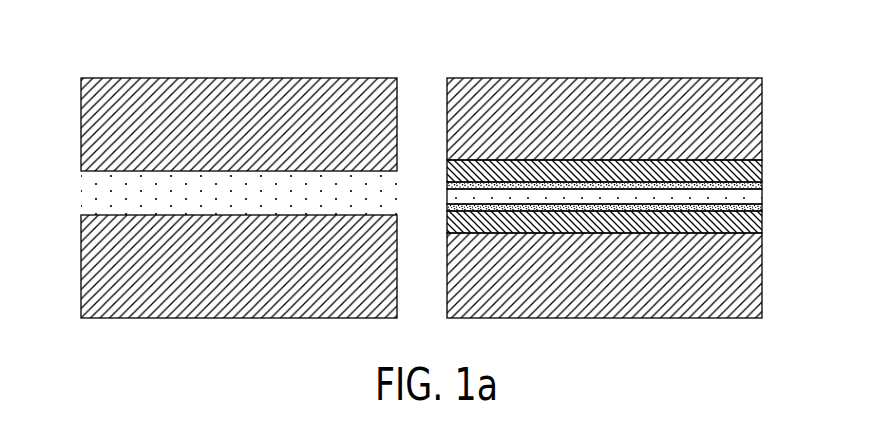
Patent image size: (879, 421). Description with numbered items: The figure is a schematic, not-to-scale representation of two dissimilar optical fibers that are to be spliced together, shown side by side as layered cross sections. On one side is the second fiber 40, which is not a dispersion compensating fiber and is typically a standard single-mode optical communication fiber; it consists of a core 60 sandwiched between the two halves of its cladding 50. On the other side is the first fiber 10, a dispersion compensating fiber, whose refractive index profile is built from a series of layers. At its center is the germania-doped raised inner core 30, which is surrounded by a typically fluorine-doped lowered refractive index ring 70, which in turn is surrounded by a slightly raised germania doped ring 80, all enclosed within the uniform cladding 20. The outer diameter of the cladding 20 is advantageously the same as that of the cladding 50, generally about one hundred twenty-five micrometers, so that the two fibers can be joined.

The second fiber 40 is at (179, 40).
The cladding 50 is at (115, 115).
The core 60 is at (133, 184).
The first fiber 10 is at (686, 42).
The uniform cladding 20 is at (731, 119).
The slightly raised germania doped ring 80 is at (754, 160).
The lowered refractive index ring 70 is at (745, 187).
The raised inner core 30 is at (750, 198).